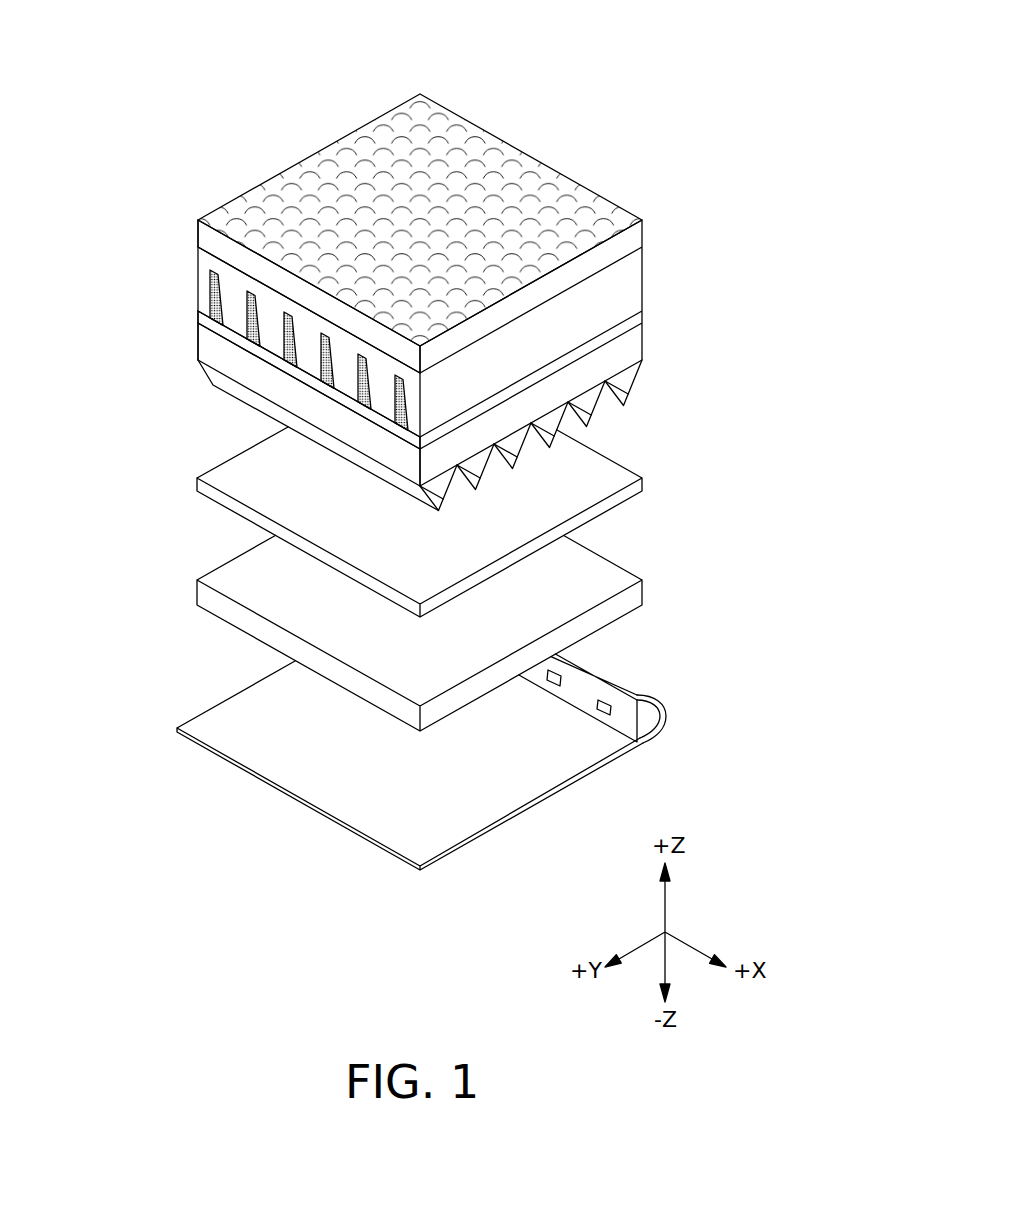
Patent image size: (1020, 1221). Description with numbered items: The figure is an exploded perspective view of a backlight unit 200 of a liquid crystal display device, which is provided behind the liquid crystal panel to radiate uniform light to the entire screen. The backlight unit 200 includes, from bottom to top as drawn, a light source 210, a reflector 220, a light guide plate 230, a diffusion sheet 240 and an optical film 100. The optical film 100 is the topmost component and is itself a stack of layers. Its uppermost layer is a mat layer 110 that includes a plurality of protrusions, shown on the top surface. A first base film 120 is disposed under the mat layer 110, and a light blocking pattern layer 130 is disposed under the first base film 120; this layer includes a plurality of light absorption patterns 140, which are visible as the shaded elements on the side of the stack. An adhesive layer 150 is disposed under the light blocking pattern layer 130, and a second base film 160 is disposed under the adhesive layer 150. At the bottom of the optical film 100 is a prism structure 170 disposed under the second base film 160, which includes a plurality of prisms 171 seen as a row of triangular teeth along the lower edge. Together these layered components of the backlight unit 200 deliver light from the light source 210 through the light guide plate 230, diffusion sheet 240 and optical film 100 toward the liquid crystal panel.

The backlight unit 200 is at (436, 438).
The optical film 100 is at (436, 297).
The mat layer 110 is at (285, 204).
The first base film 120 is at (198, 236).
The light blocking pattern layer 130 is at (202, 268).
The light absorption patterns 140 is at (210, 305).
The adhesive layer 150 is at (206, 318).
The second base film 160 is at (199, 342).
The prism structure 170 is at (436, 435).
The prisms 171 is at (589, 403).
The diffusion sheet 240 is at (612, 452).
The light guide plate 230 is at (612, 562).
The reflector 220 is at (512, 790).
The light source 210 is at (611, 699).